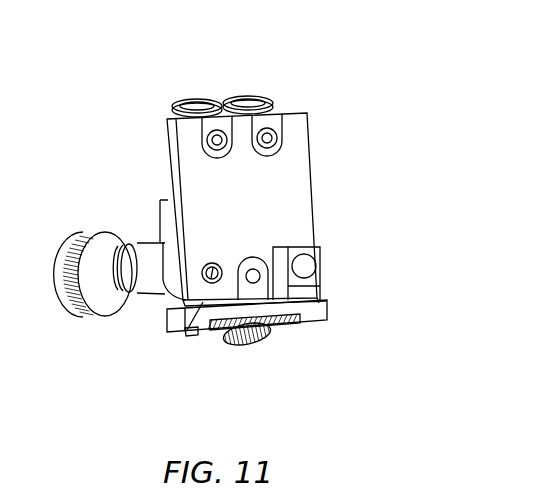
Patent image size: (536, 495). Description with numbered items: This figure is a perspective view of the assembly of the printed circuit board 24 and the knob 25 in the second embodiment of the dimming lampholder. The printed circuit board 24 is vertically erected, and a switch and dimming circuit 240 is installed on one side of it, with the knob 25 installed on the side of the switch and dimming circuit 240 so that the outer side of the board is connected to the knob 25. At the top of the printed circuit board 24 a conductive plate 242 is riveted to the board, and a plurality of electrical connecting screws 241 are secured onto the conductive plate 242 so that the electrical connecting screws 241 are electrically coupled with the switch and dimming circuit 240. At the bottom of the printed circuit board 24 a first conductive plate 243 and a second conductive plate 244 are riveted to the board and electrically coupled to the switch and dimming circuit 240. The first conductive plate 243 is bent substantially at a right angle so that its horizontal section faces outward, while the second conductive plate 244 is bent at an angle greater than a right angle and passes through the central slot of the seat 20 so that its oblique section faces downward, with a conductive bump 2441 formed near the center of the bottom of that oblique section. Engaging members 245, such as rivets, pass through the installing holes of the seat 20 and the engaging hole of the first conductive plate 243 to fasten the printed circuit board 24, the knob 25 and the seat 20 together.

The seat 20 is at (243, 220).
The printed circuit board 24 is at (293, 175).
The switch and dimming circuit 240 is at (168, 222).
The electrical connecting screws 241 is at (197, 107).
The conductive plate 242 is at (170, 120).
The first conductive plate 243 is at (190, 328).
The second conductive plate 244 is at (257, 278).
The conductive bump 2441 is at (247, 343).
The engaging members 245 is at (220, 328).
The knob 25 is at (102, 247).